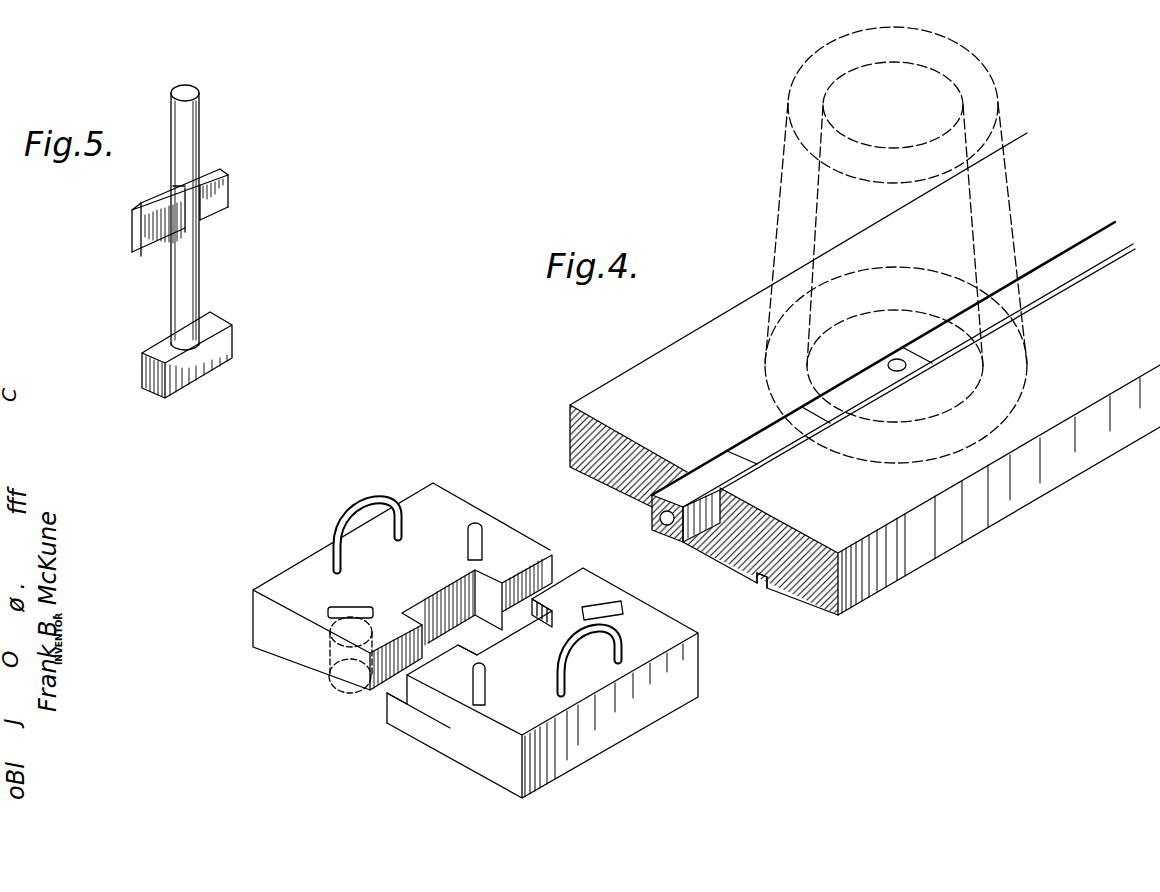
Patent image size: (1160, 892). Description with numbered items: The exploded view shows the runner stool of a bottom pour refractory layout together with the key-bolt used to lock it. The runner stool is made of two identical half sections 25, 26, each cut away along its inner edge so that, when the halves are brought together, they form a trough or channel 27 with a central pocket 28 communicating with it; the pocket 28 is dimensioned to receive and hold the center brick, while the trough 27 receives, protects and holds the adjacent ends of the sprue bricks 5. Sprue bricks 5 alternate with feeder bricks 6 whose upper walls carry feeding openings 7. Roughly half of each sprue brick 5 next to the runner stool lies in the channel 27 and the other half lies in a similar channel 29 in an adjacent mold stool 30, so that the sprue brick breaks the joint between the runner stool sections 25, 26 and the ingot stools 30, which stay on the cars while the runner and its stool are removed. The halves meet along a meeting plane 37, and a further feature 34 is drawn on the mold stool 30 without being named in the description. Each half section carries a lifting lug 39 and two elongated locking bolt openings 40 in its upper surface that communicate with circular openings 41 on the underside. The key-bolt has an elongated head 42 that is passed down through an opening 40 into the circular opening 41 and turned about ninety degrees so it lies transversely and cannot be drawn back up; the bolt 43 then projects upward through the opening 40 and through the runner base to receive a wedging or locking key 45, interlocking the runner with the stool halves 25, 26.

In FIG. 4, the sprue brick 5 is at (700, 528).
In FIG. 4, the feeder brick 6 is at (868, 383).
In FIG. 4, the feeding opening 7 is at (901, 370).
In FIG. 4, the runner stool half section 25 is at (277, 626).
In FIG. 4, the runner stool half section 26 is at (490, 760).
In FIG. 4, the trough or channel 27 is at (538, 572).
In FIG. 4, the central pocket 28 is at (447, 610).
In FIG. 4, the channel 29 is at (713, 505).
In FIG. 4, the mold stool 30 is at (958, 518).
In FIG. 4, the groove 34 is at (760, 585).
In FIG. 4, the meeting plane 37 is at (392, 706).
In FIG. 4, the lifting lug 39 is at (352, 514).
In FIG. 4, the locking bolt opening 40 is at (475, 527).
In FIG. 4, the circular opening 41 is at (342, 672).
In FIG. 5, the elongated head 42 is at (215, 347).
In FIG. 5, the bolt 43 is at (193, 249).
In FIG. 5, the wedging or locking key 45 is at (215, 193).